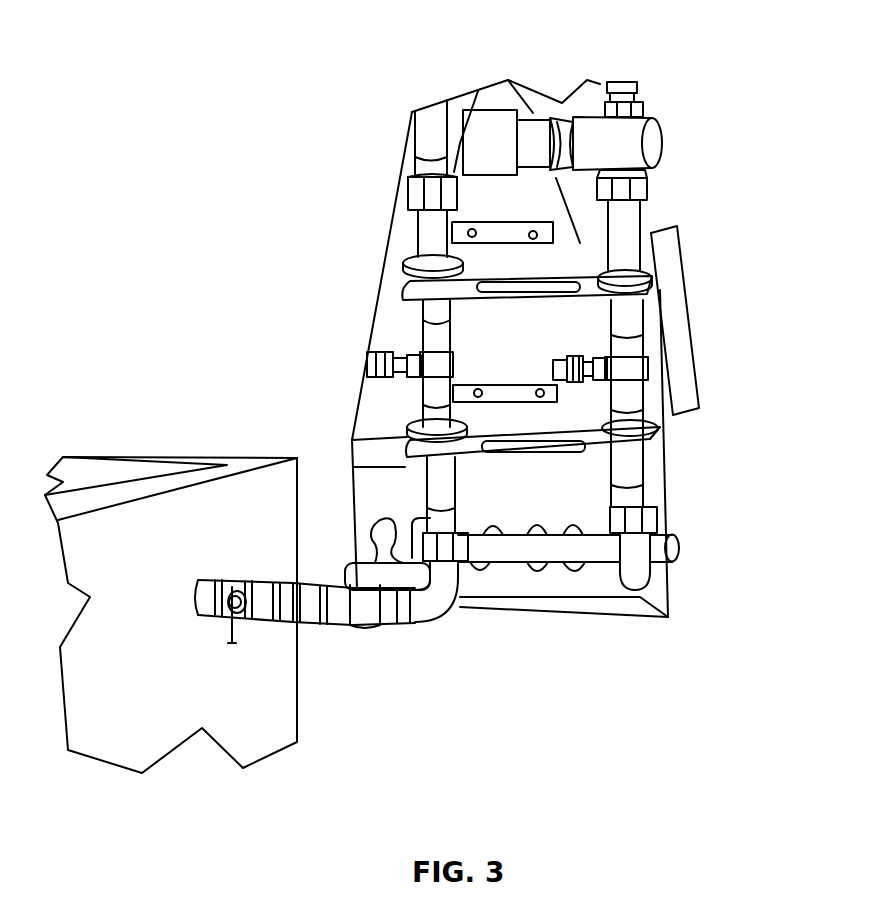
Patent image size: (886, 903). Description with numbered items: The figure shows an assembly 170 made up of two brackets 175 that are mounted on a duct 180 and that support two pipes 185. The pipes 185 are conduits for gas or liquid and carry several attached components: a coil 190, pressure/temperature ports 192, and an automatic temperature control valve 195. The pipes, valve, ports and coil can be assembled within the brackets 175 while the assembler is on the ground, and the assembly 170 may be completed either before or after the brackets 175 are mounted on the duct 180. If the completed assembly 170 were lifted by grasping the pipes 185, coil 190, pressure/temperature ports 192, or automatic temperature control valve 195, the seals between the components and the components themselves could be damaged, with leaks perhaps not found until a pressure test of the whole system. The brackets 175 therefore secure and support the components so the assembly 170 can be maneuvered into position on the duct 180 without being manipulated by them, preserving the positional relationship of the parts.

The assembly 170 is at (378, 122).
The brackets 175 is at (410, 258).
The duct 180 is at (398, 418).
The pipes 185 is at (635, 558).
The coil 190 is at (383, 542).
The pressure/temperature ports 192 is at (553, 368).
The automatic temperature control valve 195 is at (627, 155).